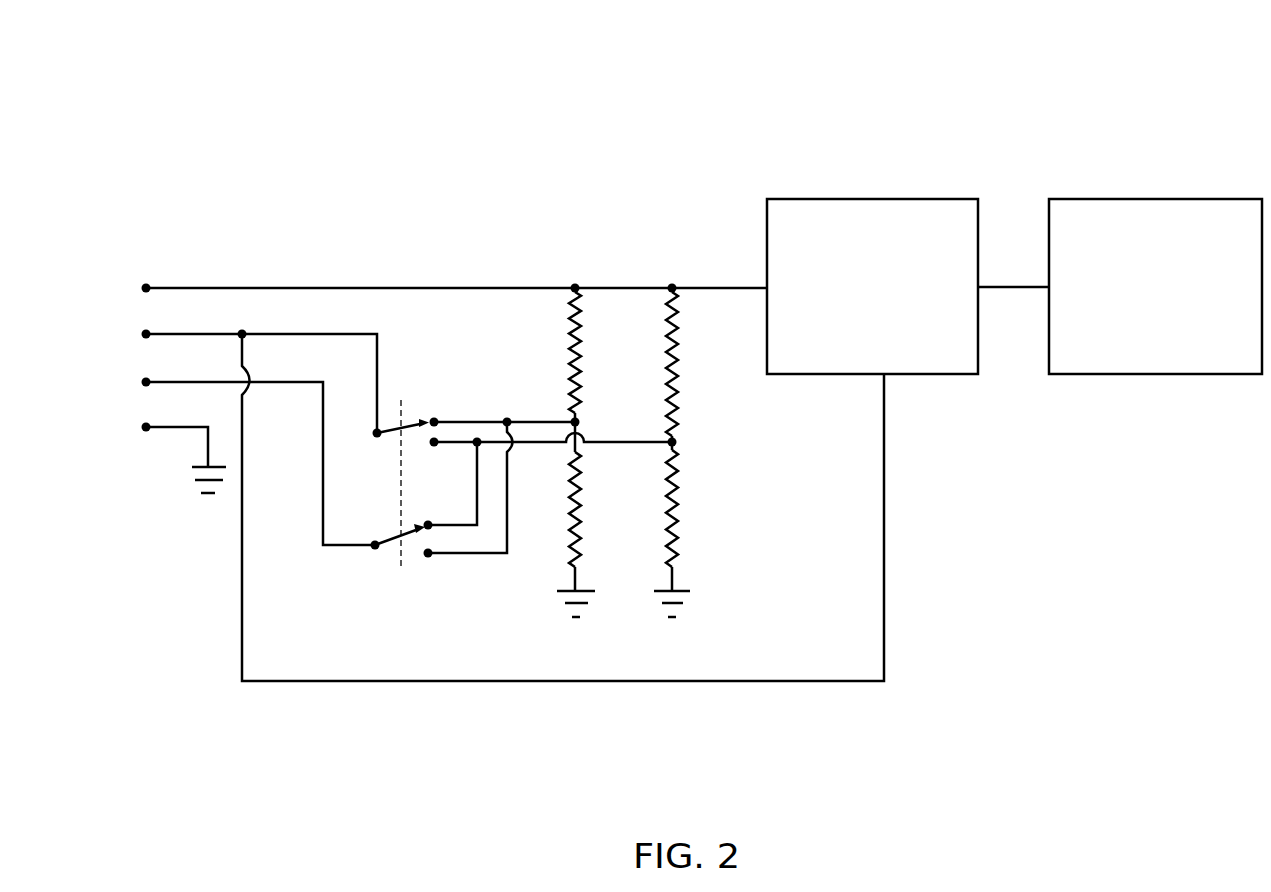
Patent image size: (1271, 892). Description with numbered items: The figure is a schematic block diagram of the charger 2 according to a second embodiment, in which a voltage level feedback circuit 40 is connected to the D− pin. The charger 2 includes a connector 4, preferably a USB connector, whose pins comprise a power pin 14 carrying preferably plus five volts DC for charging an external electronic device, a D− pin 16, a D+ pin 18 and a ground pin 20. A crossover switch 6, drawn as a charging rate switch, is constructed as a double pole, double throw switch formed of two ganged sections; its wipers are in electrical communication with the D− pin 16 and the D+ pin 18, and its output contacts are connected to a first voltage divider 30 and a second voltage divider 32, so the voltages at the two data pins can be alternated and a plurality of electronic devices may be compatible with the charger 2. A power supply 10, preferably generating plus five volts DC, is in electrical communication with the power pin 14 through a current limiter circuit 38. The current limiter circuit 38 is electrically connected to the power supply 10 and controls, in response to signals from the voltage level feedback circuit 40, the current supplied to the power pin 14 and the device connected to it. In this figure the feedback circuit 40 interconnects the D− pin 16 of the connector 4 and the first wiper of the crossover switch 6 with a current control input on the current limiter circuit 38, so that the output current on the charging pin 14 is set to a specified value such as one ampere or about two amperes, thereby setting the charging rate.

The charger 2 is at (982, 738).
The connector 4 is at (178, 124).
The crossover switch 6 is at (423, 304).
The power supply 10 is at (1115, 180).
The power pin 14 is at (142, 288).
The D− pin 16 is at (142, 335).
The D+ pin 18 is at (142, 382).
The ground pin 20 is at (142, 427).
The first voltage divider 30 is at (614, 409).
The second voltage divider 32 is at (705, 426).
The current limiter circuit 38 is at (829, 184).
The voltage level feedback circuit 40 is at (291, 711).